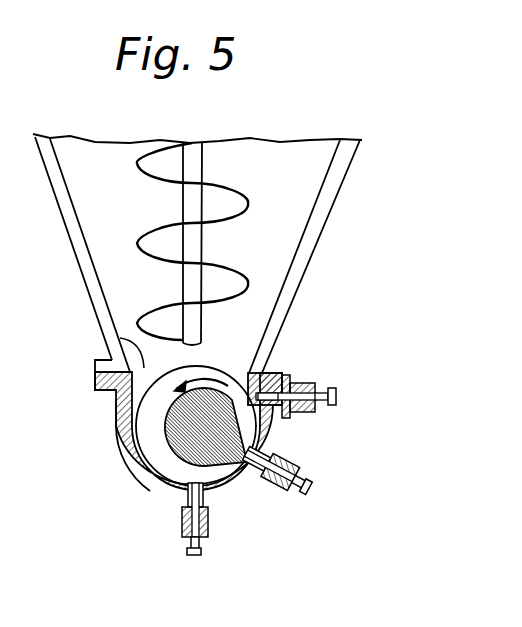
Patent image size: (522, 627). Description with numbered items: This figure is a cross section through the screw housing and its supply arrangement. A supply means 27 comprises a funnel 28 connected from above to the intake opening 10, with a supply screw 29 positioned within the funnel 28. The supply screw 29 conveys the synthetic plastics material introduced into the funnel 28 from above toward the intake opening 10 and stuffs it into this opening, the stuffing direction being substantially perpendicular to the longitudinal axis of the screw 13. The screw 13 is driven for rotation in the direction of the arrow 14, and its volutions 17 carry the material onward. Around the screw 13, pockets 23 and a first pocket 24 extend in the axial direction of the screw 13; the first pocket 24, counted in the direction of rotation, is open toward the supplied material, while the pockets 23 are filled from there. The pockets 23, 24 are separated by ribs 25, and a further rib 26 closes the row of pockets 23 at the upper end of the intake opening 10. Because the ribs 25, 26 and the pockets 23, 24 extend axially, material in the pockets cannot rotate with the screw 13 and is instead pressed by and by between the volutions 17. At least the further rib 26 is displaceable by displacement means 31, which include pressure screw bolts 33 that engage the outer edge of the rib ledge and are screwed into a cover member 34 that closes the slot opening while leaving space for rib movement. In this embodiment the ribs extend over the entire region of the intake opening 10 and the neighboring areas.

The intake opening 10 is at (112, 343).
The screw 13 is at (163, 413).
The arrow 14 is at (204, 378).
The volutions 17 is at (172, 449).
The pockets 23 is at (262, 428).
The first pocket 24 is at (137, 480).
The ribs 25 is at (255, 487).
The further rib 26 is at (264, 373).
The supply means 27 is at (298, 214).
The funnel 28 is at (316, 243).
The supply screw 29 is at (199, 244).
The displacement means 31 is at (311, 462).
The pressure screw bolts 33 is at (336, 394).
The cover member 34 is at (218, 512).